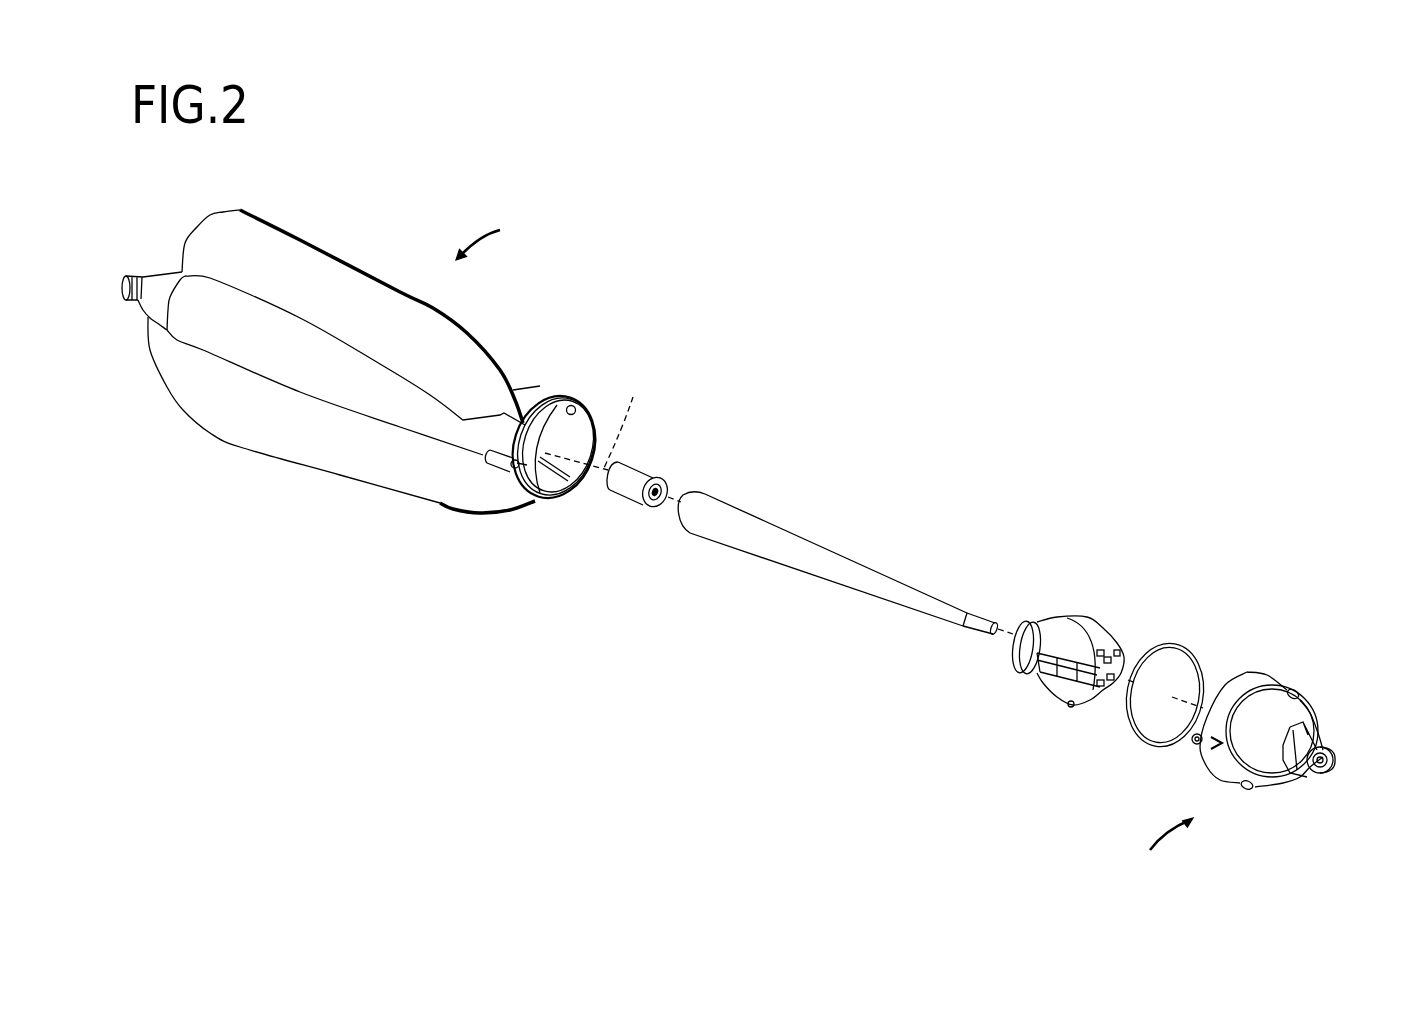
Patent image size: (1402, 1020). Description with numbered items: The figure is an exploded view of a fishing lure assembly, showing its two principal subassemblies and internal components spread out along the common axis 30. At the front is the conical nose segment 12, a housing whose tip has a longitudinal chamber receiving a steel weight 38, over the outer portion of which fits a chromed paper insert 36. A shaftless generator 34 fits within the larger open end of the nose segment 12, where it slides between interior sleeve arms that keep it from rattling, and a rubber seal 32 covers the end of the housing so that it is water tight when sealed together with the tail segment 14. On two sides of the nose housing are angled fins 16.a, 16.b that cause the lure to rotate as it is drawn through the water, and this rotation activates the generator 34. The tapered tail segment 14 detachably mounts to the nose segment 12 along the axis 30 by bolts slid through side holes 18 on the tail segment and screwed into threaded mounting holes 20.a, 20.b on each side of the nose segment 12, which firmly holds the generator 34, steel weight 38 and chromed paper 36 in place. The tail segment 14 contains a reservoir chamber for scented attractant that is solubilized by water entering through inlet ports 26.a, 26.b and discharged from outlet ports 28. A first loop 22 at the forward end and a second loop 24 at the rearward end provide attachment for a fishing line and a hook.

The nose segment 12 is at (494, 230).
The tail segment 14 is at (1150, 851).
The angled fin 16.a is at (277, 230).
The angled fin 16.b is at (303, 465).
The side holes 18 is at (1190, 743).
The threaded mounting hole 20.a is at (597, 427).
The threaded mounting hole 20.b is at (500, 470).
The first loop 22 is at (123, 282).
The second loop 24 is at (1335, 755).
The inlet port 26.a is at (1296, 690).
The inlet port 26.b is at (1248, 789).
The outlet ports 28 is at (1300, 780).
The common axis 30 is at (633, 417).
The rubber seal 32 is at (1193, 644).
The shaftless generator 34 is at (1106, 616).
The chromed paper insert 36 is at (823, 543).
The steel weight 38 is at (640, 463).